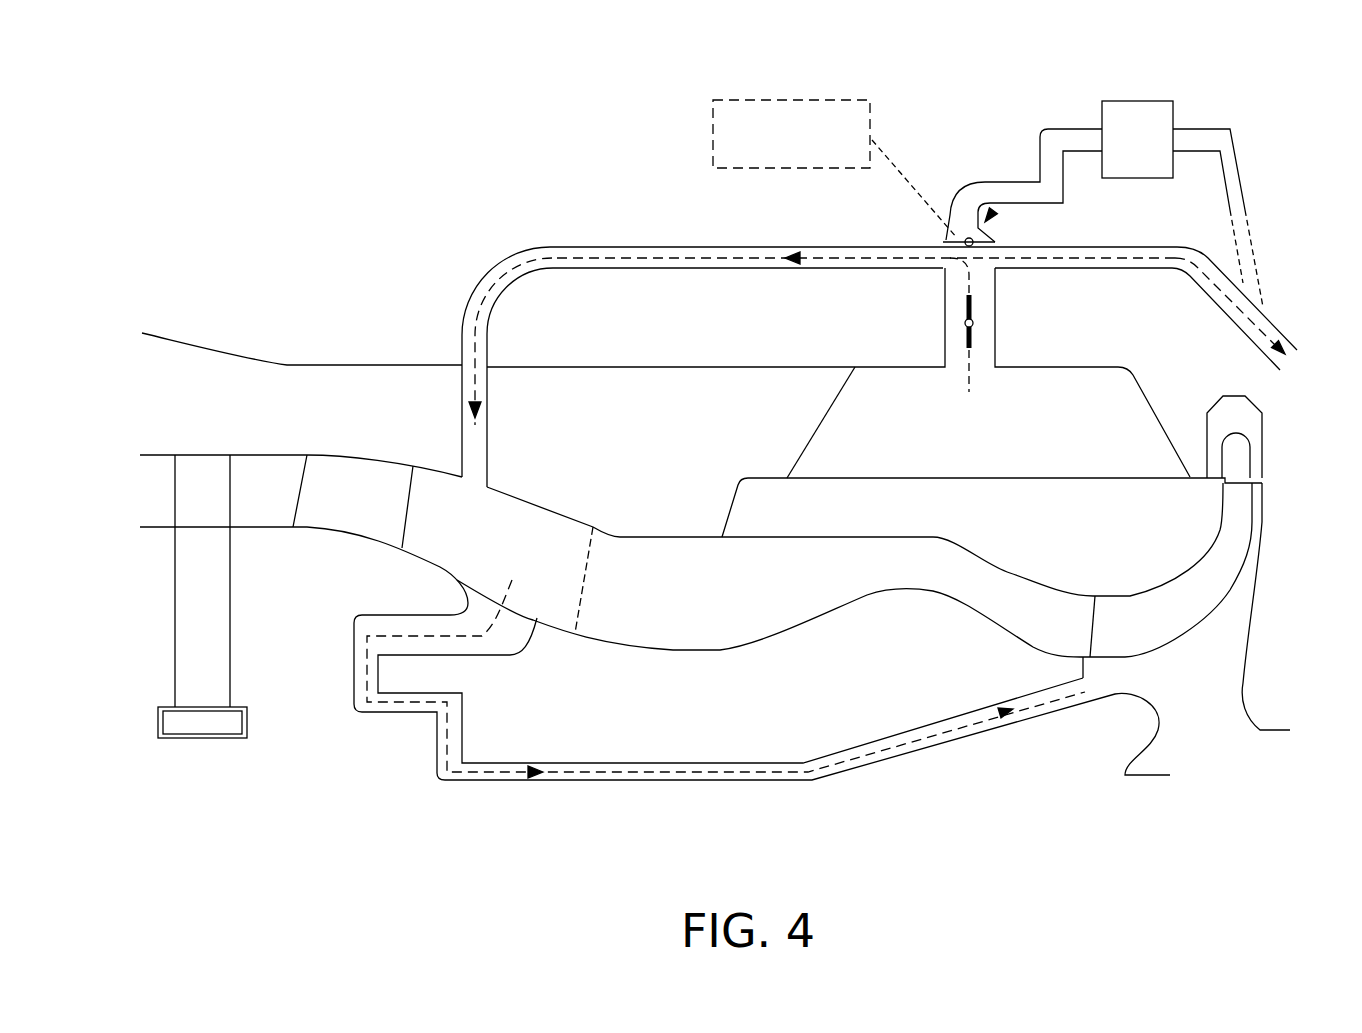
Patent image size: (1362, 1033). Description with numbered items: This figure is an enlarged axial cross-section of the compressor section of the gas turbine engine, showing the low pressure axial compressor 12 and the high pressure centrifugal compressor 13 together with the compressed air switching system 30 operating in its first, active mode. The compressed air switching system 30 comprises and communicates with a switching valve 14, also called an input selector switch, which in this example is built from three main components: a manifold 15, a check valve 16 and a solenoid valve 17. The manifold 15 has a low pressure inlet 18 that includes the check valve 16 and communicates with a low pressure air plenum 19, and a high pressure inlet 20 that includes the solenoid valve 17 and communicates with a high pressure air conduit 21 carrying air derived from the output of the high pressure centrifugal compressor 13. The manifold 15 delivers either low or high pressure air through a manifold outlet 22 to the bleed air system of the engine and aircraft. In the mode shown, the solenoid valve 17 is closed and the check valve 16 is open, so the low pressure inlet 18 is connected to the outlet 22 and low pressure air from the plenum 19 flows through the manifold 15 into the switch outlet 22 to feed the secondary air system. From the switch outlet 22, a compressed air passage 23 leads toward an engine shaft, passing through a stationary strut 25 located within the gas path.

The low pressure axial compressor 12 is at (270, 762).
The high pressure centrifugal compressor 13 is at (1192, 677).
The switching valve 14 is at (990, 216).
The manifold 15 is at (958, 238).
The check valve 16 is at (945, 320).
The solenoid valve 17 is at (1141, 118).
The low pressure inlet 18 is at (980, 355).
The low pressure air plenum 19 is at (1016, 439).
The high pressure inlet 20 is at (1083, 128).
The high pressure air conduit 21 is at (1243, 219).
The manifold outlet 22 is at (868, 244).
The compressed air passage 23 is at (497, 272).
The stationary strut 25 is at (437, 493).
The compressed air switching system 30 is at (778, 141).